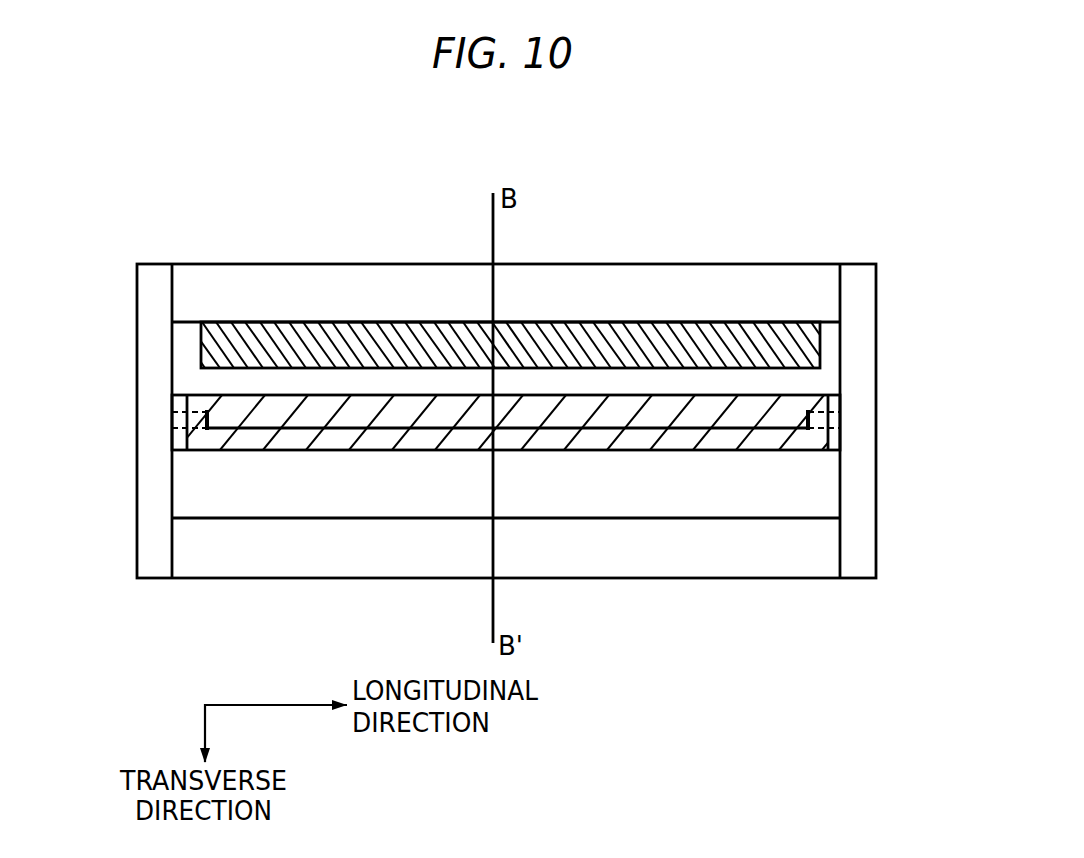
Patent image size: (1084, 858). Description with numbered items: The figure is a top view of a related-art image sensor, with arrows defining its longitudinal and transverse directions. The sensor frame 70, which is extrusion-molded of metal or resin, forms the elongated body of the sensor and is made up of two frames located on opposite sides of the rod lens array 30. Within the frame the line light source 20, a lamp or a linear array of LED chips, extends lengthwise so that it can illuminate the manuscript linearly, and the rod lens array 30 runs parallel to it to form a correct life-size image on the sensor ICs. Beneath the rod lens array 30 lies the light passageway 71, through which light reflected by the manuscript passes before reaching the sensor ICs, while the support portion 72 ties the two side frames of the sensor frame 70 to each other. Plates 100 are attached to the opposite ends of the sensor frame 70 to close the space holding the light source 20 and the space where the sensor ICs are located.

The plates 100 is at (153, 308).
The sensor frame 70 is at (283, 263).
The line light source 20 is at (823, 345).
The rod lens array 30 is at (790, 398).
The light passageway 71 is at (750, 431).
The support portion 72 is at (190, 410).